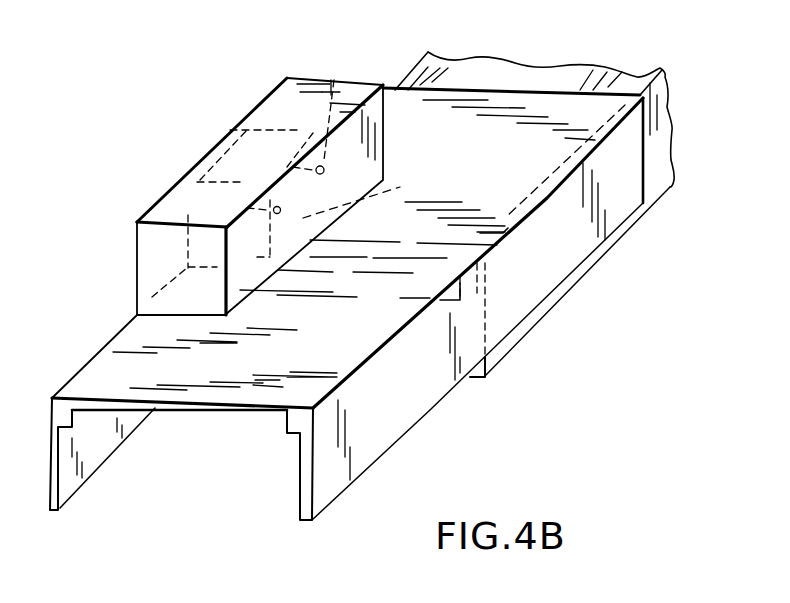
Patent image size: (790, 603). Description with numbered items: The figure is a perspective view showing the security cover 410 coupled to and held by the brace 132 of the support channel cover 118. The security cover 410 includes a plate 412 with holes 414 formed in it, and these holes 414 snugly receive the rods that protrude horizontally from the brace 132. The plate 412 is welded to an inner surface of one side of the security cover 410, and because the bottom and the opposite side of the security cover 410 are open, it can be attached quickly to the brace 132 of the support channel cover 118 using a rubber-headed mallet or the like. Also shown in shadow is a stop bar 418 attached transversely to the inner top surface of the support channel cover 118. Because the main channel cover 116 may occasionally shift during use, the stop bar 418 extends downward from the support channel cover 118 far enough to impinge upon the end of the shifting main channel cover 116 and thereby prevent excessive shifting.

The main channel cover 116 is at (638, 61).
The support channel cover 118 is at (647, 145).
The brace 132 is at (161, 200).
The security cover 410 is at (135, 268).
The plate 412 is at (335, 74).
The holes 414 is at (360, 182).
The stop bar 418 is at (388, 302).